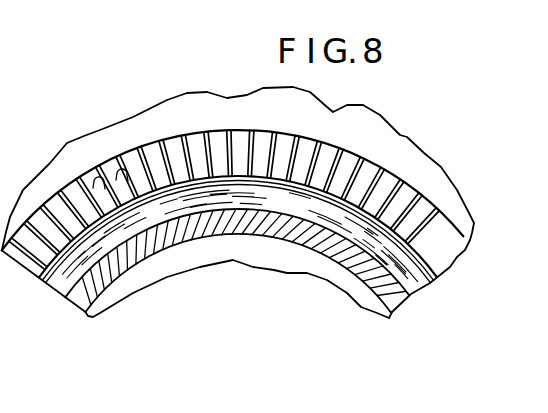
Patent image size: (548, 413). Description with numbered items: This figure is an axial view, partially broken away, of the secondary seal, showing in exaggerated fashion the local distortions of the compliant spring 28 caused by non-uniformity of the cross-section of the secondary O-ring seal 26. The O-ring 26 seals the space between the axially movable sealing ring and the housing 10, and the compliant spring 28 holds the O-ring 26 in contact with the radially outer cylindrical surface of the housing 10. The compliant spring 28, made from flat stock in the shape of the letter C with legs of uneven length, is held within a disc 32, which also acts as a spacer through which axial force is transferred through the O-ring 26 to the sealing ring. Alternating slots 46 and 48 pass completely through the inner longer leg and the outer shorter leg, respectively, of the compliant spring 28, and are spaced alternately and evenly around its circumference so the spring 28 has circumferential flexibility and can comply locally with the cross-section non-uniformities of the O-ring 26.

The housing 10 is at (167, 239).
The O-ring 26 is at (424, 280).
The compliant spring 28 is at (341, 158).
The disc 32 is at (294, 122).
The slots 46 is at (117, 172).
The slots 48 is at (94, 179).